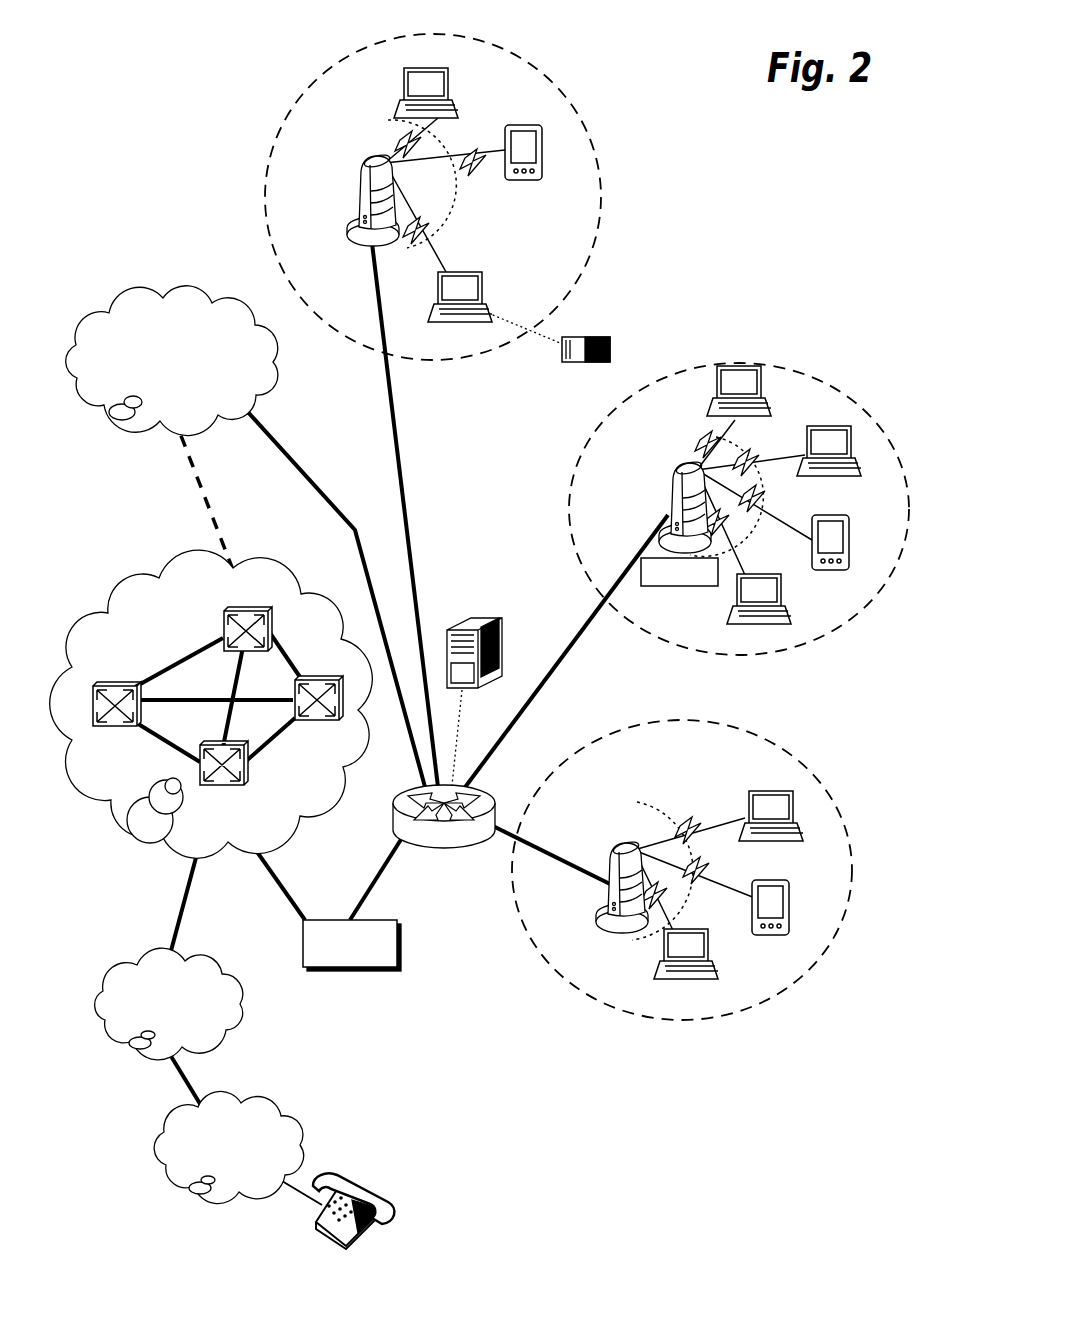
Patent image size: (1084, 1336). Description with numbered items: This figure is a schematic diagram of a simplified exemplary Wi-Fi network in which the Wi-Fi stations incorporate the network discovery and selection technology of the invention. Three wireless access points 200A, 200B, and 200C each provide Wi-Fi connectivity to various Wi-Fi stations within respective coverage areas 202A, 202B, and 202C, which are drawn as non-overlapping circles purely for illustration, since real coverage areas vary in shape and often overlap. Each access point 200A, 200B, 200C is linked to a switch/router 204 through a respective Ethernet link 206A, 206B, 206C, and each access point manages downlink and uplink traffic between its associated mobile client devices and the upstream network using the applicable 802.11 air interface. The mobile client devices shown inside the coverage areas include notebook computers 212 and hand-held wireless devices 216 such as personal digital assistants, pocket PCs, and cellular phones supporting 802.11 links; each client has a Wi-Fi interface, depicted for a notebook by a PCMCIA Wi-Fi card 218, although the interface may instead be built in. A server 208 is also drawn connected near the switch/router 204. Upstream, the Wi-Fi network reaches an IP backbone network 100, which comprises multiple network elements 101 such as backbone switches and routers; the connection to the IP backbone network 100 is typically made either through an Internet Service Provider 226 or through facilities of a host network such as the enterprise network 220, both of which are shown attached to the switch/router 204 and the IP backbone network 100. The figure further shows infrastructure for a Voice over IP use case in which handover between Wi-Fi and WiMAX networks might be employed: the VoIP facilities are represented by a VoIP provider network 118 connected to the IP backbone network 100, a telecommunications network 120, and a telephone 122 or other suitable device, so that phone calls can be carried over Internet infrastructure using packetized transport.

The IP backbone network 100 is at (211, 689).
The network elements 101 is at (246, 832).
The VoIP provider network 118 is at (220, 966).
The telecommunications (telco) network 120 is at (165, 1170).
The telephone 122 is at (360, 1187).
The access point 200A is at (360, 192).
The access point 200B is at (672, 488).
The access point 200C is at (610, 917).
The coverage area 202A is at (597, 150).
The coverage area 202B is at (818, 628).
The coverage area 202C is at (848, 834).
The switch/router 204 is at (448, 840).
The Ethernet link 206A is at (405, 432).
The Ethernet link 206B is at (560, 660).
The Ethernet link 206C is at (535, 843).
The server 208 is at (490, 618).
The notebook computer 212 is at (462, 324).
The hand-held wireless device 216 is at (542, 140).
The PCMCIA Wi-Fi card 218 is at (610, 342).
The enterprise network 220 is at (155, 297).
The Internet Service Provider (ISP) 226 is at (398, 946).